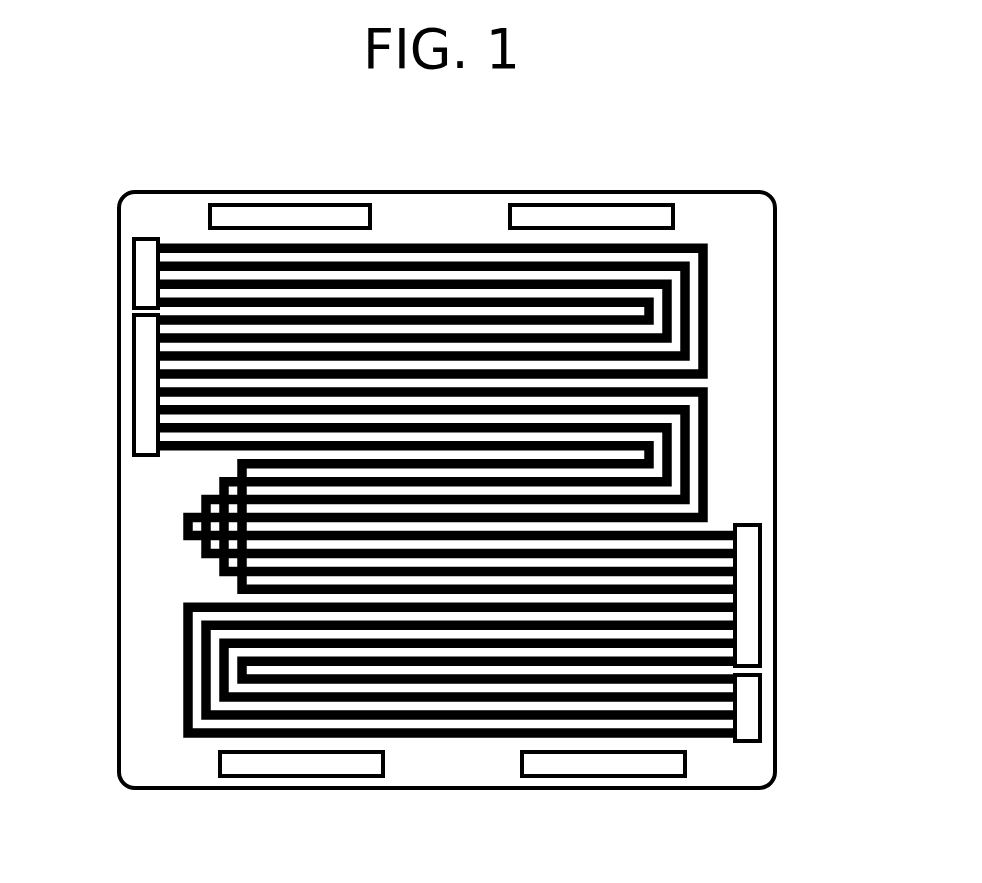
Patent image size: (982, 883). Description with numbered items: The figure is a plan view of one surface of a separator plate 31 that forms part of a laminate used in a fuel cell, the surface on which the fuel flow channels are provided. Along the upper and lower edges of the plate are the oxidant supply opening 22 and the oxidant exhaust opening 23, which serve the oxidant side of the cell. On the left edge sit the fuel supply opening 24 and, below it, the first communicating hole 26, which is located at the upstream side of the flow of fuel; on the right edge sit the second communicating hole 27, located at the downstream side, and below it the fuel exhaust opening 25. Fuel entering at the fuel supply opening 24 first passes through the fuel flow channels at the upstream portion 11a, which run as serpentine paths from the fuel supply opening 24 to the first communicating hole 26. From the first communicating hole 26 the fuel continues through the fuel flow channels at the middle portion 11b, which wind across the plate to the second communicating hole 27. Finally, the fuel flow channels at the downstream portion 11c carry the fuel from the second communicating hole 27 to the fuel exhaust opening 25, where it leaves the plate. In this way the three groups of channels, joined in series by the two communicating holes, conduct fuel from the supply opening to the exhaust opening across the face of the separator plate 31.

The separator plate 31 is at (777, 264).
The oxidant supply opening 22 is at (318, 218).
The oxidant exhaust opening 23 is at (577, 765).
The fuel supply opening 24 is at (142, 272).
The fuel exhaust opening 25 is at (748, 700).
The first communicating hole 26 is at (142, 385).
The second communicating hole 27 is at (748, 588).
The fuel flow channels at an upstream portion 11a is at (692, 325).
The fuel flow channels at a middle portion 11b is at (695, 445).
The fuel flow channels at a downstream portion 11c is at (197, 651).